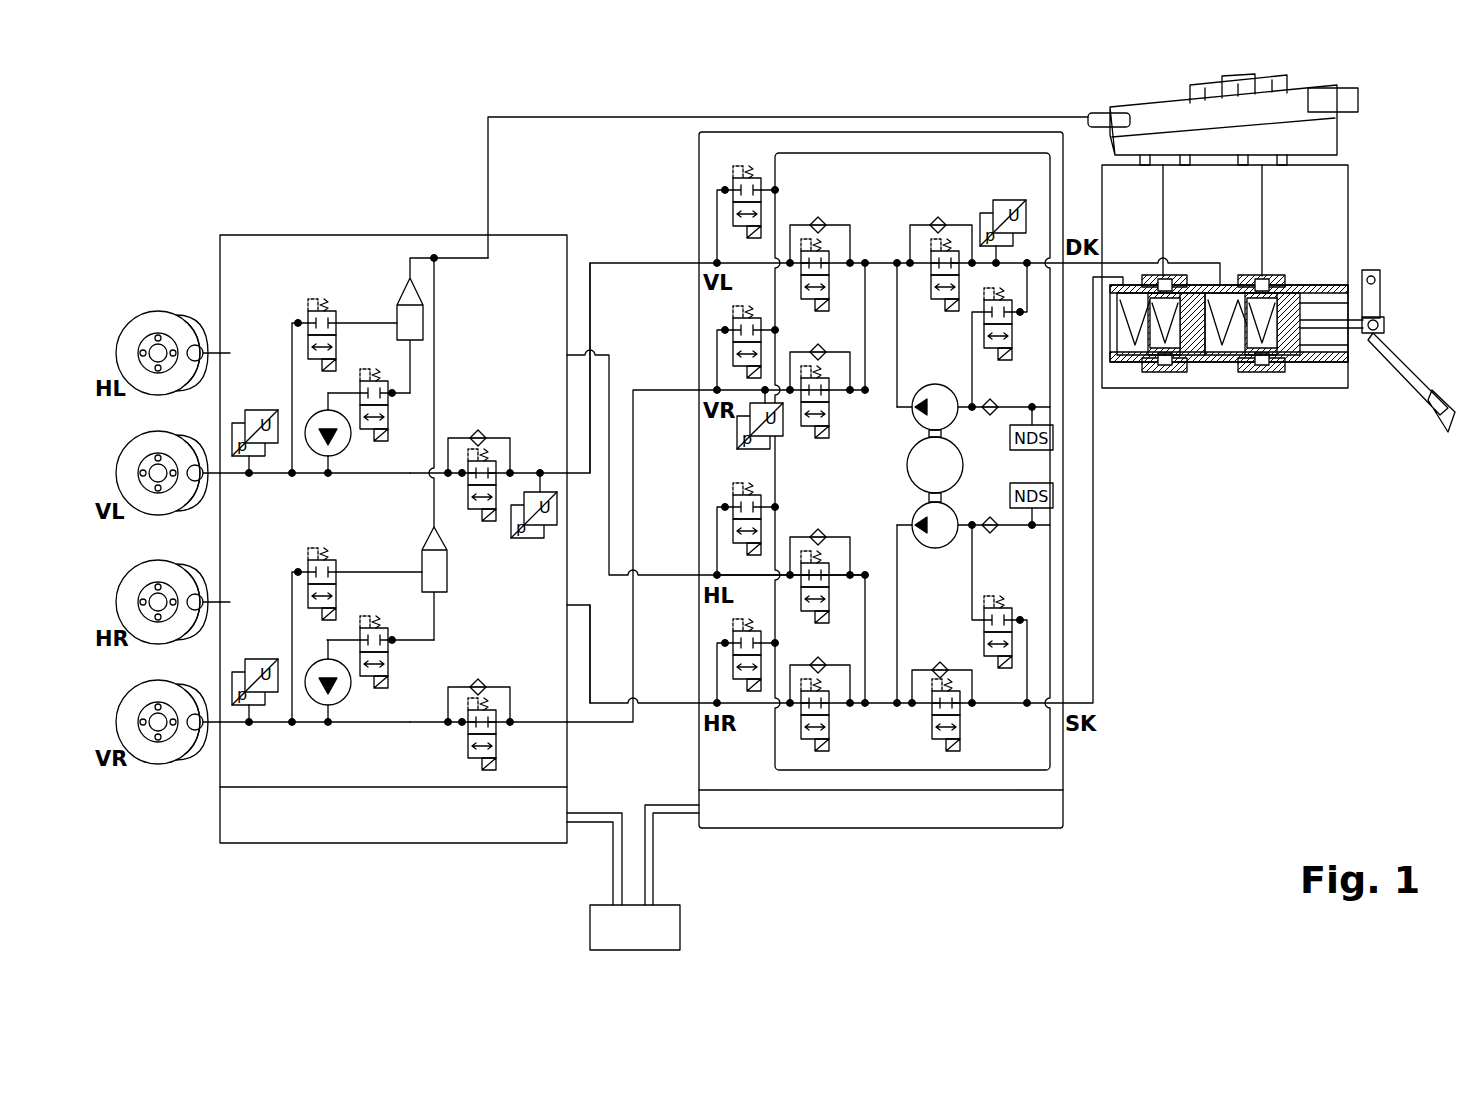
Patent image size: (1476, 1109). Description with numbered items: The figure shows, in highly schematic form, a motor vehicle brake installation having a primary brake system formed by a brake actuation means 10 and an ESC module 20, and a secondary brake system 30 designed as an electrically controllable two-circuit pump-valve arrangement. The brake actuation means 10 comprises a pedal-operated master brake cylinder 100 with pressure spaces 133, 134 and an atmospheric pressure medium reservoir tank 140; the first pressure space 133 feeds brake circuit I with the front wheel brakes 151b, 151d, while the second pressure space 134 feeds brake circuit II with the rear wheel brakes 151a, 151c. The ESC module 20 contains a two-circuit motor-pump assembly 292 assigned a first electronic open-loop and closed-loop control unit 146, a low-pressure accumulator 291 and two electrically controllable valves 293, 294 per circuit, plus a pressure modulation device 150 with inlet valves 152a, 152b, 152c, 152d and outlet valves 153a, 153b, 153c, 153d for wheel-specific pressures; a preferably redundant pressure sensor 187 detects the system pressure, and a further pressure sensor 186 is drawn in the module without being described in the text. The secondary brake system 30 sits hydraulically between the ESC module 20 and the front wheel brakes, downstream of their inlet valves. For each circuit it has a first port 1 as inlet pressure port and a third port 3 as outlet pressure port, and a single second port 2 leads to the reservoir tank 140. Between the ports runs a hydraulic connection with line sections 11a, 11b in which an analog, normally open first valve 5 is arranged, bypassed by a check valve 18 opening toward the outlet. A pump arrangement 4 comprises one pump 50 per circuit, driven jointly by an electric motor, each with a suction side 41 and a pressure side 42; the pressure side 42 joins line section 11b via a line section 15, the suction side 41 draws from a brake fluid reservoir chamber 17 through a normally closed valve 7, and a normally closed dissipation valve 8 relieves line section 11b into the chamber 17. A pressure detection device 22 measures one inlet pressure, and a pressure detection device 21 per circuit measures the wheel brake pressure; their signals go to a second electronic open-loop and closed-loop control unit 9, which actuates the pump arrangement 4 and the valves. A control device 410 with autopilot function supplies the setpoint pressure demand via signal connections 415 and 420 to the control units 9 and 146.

The first port 1 is at (575, 485).
The second port 2 is at (487, 230).
The third port 3 is at (213, 482).
The pump arrangement 4 is at (338, 484).
The first valve 5 is at (497, 514).
The valve 7 is at (388, 402).
The dissipation valve 8 is at (336, 318).
The second electronic open-loop and closed-loop control unit 9 is at (360, 820).
The brake actuation means 10 is at (1368, 202).
The line section 11a is at (516, 470).
The line section 11b is at (297, 477).
The line section 15 is at (327, 478).
The brake fluid reservoir chamber 17 is at (424, 322).
The check valve 18 is at (484, 432).
The ESC module 20 is at (680, 161).
The pressure detection device 21 is at (257, 410).
The pressure detection device 22 is at (550, 530).
The secondary brake system 30 is at (290, 221).
The suction side 41 is at (318, 418).
The pressure side 42 is at (345, 478).
The pump 50 is at (331, 426).
The master brake cylinder 100 is at (1310, 374).
The pressure space 133 is at (1228, 362).
The pressure space 134 is at (1130, 362).
The pressure medium reservoir tank 140 is at (1172, 117).
The first electronic open-loop and closed-loop control unit 146 is at (995, 815).
The pressure modulation device 150 is at (802, 183).
The wheel brake 151a is at (188, 326).
The wheel brake 151b is at (188, 446).
The wheel brake 151c is at (188, 575).
The wheel brake 151d is at (188, 695).
The inlet valve 152a is at (832, 292).
The inlet valve 152b is at (832, 410).
The inlet valve 152c is at (832, 602).
The inlet valve 152d is at (832, 726).
The outlet valve 153a is at (726, 196).
The outlet valve 153b is at (726, 336).
The outlet valve 153c is at (726, 513).
The outlet valve 153d is at (726, 649).
The pressure sensor 186 is at (988, 200).
The pressure sensor 187 is at (740, 430).
The low-pressure accumulator 291 is at (1056, 497).
The motor-pump assembly 292 is at (900, 485).
The electrically controllable valve 293 is at (934, 292).
The electrically controllable valve 294 is at (1002, 348).
The control device 410 is at (683, 929).
The signal connection 415 is at (610, 884).
The signal connection 420 is at (662, 884).